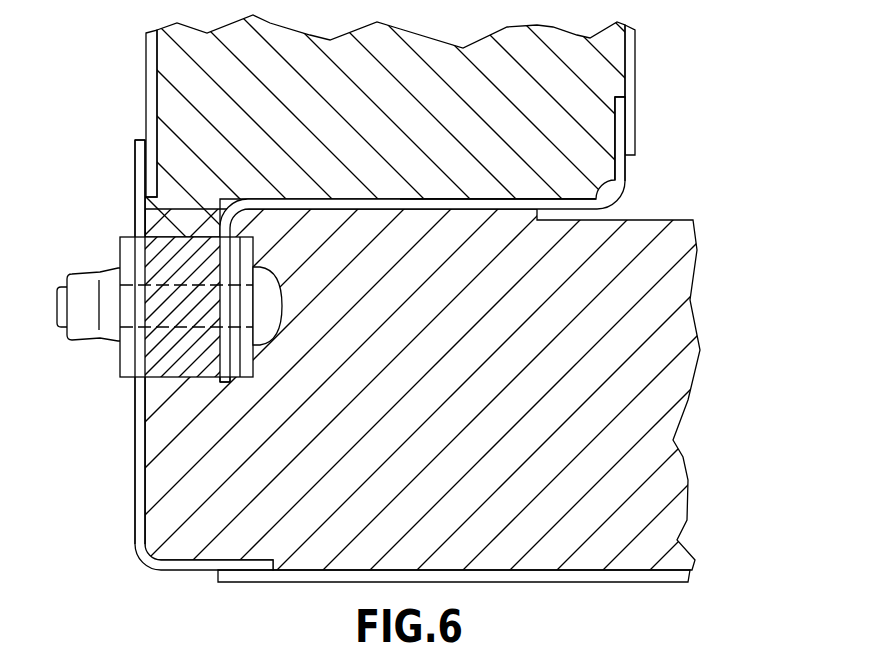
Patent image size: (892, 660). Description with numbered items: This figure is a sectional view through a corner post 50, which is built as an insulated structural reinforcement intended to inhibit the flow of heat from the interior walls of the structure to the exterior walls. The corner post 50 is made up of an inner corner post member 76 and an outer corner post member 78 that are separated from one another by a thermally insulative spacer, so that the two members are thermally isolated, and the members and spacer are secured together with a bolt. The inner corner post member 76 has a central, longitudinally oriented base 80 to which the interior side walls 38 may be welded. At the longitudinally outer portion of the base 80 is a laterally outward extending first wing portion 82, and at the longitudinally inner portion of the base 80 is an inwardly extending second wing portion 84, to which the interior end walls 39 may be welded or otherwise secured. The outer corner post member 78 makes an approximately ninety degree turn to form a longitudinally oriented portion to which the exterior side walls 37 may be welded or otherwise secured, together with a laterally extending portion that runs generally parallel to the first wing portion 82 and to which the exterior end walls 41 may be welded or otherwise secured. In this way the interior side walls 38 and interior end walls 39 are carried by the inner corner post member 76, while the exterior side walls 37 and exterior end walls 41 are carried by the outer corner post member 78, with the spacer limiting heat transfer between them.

The exterior side wall 37 is at (586, 583).
The interior side wall 38 is at (680, 210).
The interior end wall 39 is at (636, 80).
The exterior end wall 41 is at (146, 66).
The corner post 50 is at (97, 415).
The inner corner post member 76 is at (492, 197).
The outer corner post member 78 is at (146, 440).
The base 80 is at (398, 197).
The first wing portion 82 is at (222, 245).
The second wing portion 84 is at (627, 175).